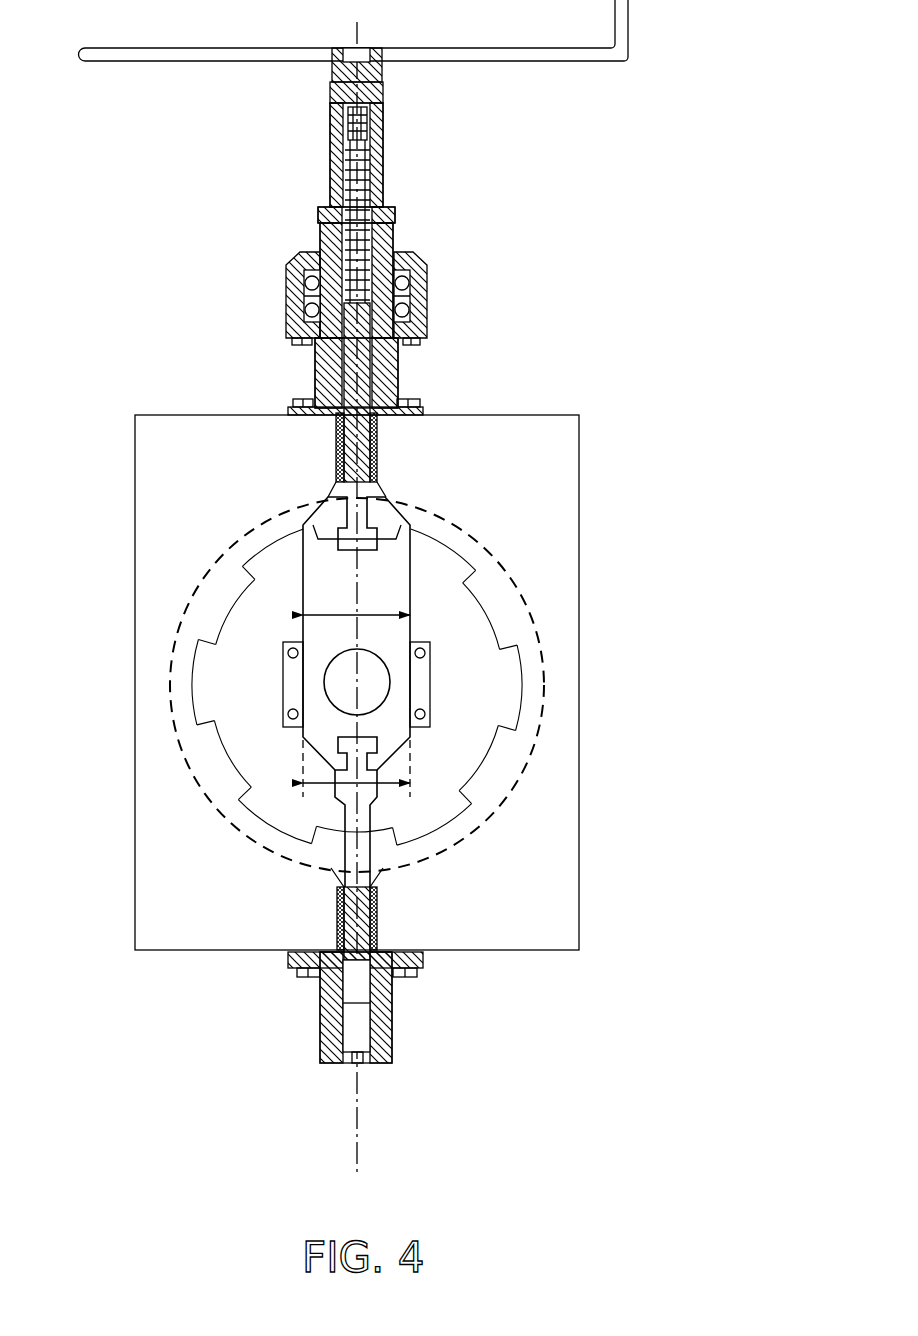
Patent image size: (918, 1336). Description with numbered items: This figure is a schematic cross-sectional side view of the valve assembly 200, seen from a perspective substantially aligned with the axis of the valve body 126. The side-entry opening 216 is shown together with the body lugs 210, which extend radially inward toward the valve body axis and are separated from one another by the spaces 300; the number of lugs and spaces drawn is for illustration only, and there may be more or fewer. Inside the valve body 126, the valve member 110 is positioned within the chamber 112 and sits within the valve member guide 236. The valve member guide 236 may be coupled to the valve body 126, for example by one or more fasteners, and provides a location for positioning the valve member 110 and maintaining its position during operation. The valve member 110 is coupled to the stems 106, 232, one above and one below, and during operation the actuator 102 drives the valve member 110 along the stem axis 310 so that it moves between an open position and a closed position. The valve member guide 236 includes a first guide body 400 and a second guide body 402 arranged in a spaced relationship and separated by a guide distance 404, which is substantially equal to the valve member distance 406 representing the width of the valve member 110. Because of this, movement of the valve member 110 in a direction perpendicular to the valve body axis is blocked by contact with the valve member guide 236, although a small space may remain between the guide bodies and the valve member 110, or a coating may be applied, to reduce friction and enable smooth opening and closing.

The actuator 102 is at (373, 175).
The stem 106 is at (355, 407).
The valve member 110 is at (313, 577).
The chamber 112 is at (432, 552).
The valve body 126 is at (580, 933).
The valve assembly 200 is at (603, 175).
The body lugs 210 is at (485, 610).
The opening 216 is at (420, 662).
The stem 232 is at (358, 930).
The valve member guide 236 is at (430, 698).
The spaces 300 is at (503, 700).
The stem axis 310 is at (358, 1035).
The first guide body 400 is at (293, 683).
The second guide body 402 is at (423, 687).
The guide distance 404 is at (385, 783).
The valve member distance 406 is at (360, 615).